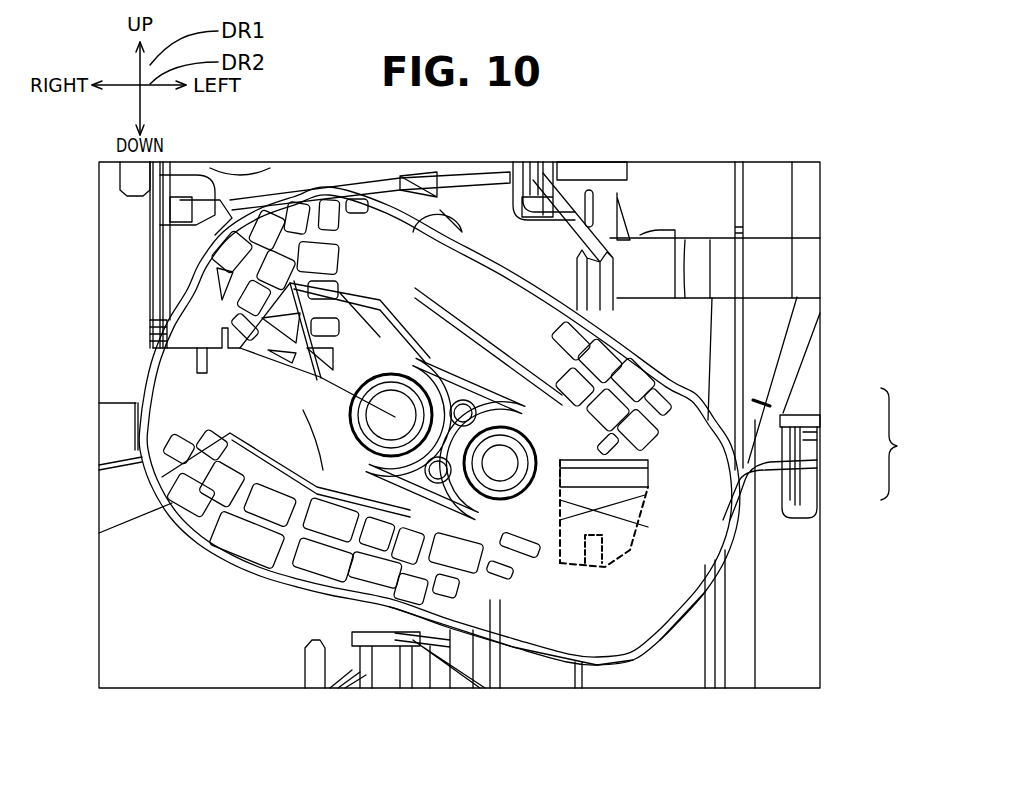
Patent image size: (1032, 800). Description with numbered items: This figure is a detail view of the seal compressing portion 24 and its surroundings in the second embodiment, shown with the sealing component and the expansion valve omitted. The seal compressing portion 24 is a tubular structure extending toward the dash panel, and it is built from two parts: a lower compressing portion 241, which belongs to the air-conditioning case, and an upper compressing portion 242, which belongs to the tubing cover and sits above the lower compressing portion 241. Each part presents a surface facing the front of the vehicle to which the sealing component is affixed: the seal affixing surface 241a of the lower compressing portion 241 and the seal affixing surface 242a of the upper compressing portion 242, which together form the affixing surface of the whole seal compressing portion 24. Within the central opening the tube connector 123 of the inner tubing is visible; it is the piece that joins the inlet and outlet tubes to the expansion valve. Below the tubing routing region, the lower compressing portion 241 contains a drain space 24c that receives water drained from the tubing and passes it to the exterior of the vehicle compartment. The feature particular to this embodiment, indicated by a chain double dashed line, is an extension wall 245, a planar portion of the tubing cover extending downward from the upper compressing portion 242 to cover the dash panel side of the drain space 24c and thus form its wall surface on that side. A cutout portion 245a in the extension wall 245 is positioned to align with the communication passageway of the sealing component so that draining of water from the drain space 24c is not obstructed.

The seal compressing portion 24 is at (904, 444).
The lower compressing portion 241 is at (692, 625).
The seal affixing surface 241a is at (653, 615).
The upper compressing portion 242 is at (695, 385).
The seal affixing surface 242a is at (480, 293).
The drain space 24c is at (538, 520).
The tube connector 123 is at (470, 498).
The extension wall 245 is at (550, 548).
The cutout portion 245a is at (592, 567).